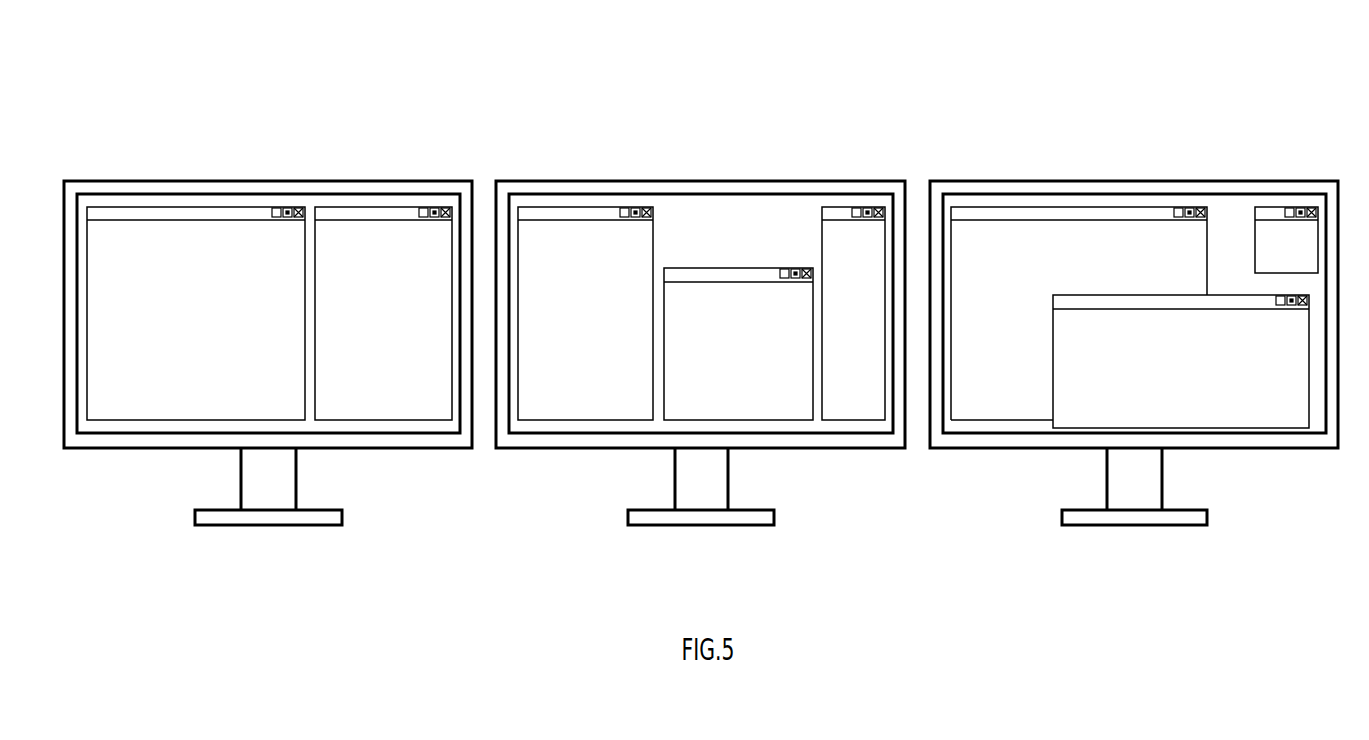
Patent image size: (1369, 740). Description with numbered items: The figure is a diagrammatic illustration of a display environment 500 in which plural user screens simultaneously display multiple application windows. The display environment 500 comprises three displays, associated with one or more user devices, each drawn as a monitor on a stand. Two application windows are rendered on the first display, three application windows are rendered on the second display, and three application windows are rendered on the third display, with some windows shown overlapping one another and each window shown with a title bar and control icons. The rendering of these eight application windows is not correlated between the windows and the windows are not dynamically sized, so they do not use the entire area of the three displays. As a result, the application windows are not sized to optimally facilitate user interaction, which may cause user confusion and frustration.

The display environment 500 is at (193, 77).